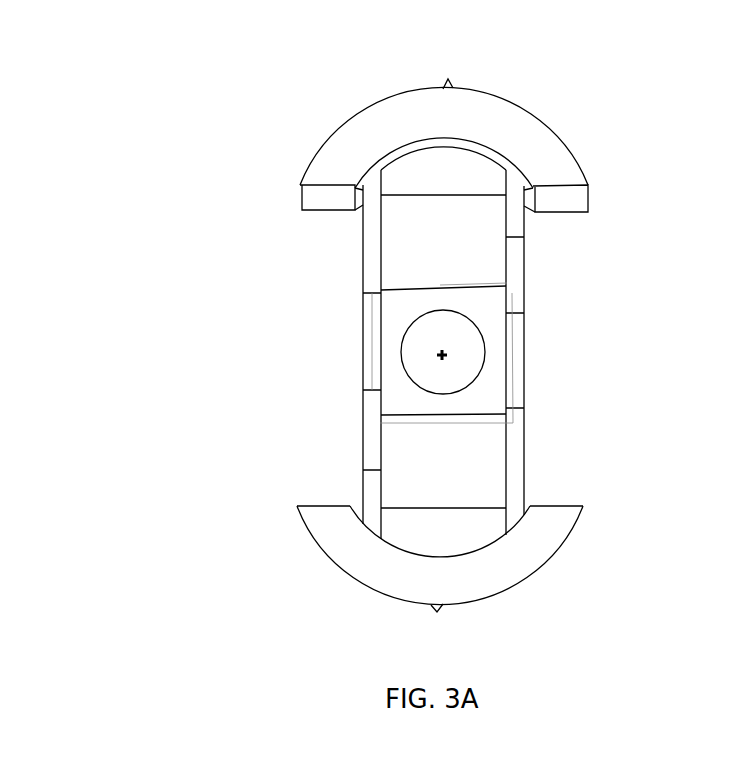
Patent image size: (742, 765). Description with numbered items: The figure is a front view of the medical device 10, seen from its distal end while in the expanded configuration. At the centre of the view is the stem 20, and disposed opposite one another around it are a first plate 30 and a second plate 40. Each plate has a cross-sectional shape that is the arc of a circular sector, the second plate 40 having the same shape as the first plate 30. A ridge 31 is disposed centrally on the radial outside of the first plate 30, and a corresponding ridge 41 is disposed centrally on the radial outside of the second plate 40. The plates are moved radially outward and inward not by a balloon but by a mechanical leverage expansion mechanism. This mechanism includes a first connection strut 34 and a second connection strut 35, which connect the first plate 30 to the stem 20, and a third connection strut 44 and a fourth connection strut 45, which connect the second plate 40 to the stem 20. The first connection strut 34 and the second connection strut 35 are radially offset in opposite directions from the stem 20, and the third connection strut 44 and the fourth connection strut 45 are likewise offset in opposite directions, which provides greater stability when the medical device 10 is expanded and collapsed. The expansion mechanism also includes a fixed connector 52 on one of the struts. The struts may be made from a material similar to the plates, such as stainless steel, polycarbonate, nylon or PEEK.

The medical device 10 is at (307, 113).
The stem 20 is at (405, 325).
The first plate 30 is at (562, 143).
The ridge 31 is at (452, 83).
The first connection strut 34 is at (362, 248).
The second connection strut 35 is at (527, 253).
The second plate 40 is at (323, 552).
The ridge 41 is at (432, 611).
The third connection strut 44 is at (527, 465).
The fourth connection strut 45 is at (360, 460).
The fixed connector 52 is at (362, 400).